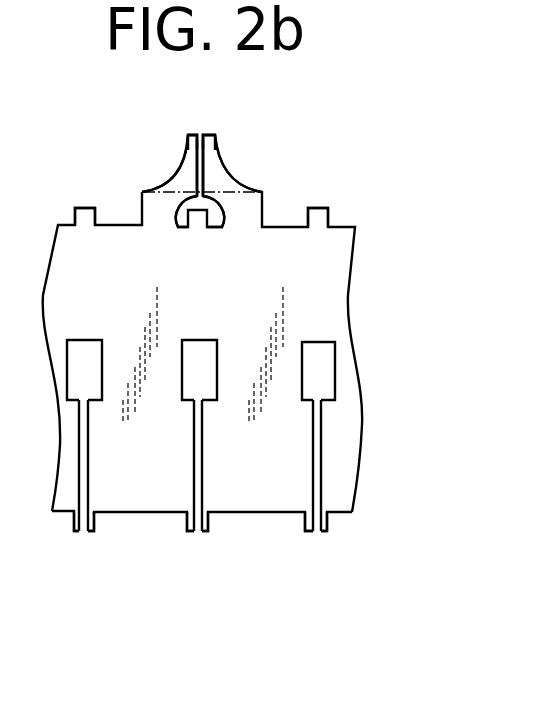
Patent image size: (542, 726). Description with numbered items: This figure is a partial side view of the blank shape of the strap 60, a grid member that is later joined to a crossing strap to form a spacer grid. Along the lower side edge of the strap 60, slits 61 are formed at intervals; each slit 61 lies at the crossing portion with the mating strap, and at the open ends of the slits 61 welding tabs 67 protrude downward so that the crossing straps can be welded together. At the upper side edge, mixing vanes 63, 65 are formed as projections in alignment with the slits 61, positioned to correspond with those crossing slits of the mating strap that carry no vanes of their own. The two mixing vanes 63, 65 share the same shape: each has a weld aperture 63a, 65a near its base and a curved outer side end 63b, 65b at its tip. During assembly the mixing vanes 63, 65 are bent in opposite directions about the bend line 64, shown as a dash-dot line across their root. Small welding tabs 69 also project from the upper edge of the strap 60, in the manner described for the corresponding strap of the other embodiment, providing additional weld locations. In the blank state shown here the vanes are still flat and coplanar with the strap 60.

The strap 60 is at (341, 368).
The slits 61 is at (89, 456).
The mixing vane 63 is at (217, 170).
The weld aperture 63a is at (218, 221).
The curved outer side end 63b is at (213, 148).
The bend line 64 is at (233, 190).
The mixing vane 65 is at (168, 182).
The weld aperture 65a is at (180, 221).
The curved outer side end 65b is at (183, 159).
The welding tabs 67 is at (75, 531).
The alignment projections 69 is at (78, 209).